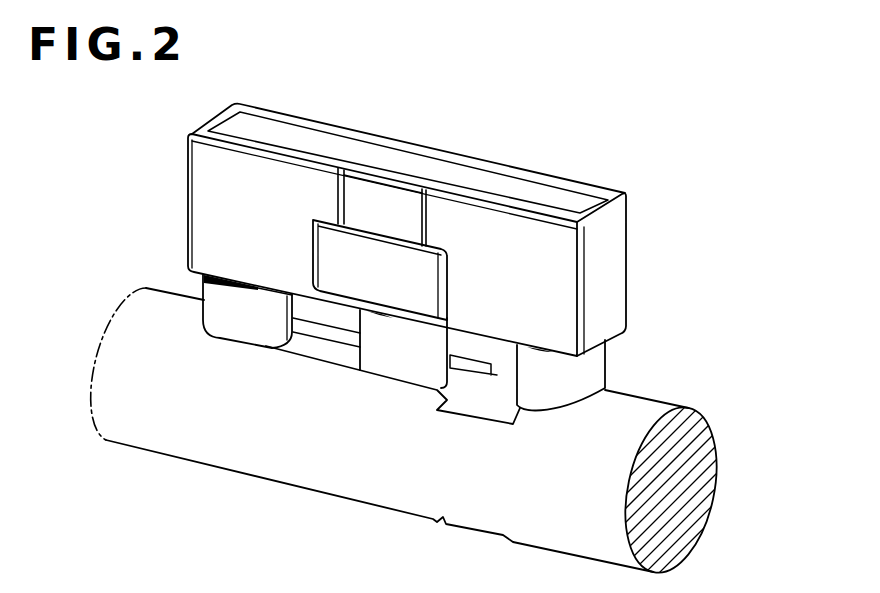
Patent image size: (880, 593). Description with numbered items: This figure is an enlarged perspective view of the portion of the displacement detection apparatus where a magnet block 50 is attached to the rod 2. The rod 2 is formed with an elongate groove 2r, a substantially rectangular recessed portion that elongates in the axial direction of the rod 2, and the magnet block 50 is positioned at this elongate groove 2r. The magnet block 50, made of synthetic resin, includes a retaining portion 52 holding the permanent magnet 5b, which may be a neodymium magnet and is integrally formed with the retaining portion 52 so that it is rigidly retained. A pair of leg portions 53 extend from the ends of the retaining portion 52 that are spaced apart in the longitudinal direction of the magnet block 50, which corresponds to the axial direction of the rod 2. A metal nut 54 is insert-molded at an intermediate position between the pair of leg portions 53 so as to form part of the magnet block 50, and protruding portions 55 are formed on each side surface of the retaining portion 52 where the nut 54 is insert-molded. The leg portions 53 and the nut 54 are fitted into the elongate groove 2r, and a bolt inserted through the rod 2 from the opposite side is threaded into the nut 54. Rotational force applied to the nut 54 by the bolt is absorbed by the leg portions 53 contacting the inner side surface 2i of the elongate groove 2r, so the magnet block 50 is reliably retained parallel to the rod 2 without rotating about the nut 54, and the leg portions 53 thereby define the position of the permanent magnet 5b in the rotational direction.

The rod 2 is at (202, 440).
The elongate groove 2r is at (328, 353).
The inner side surface 2i is at (490, 366).
The permanent magnet 5b is at (307, 135).
The magnet block 50 is at (633, 188).
The retaining portion 52 is at (607, 276).
The leg portions 53 is at (222, 292).
The nut 54 is at (403, 358).
The protruding portions 55 is at (407, 263).